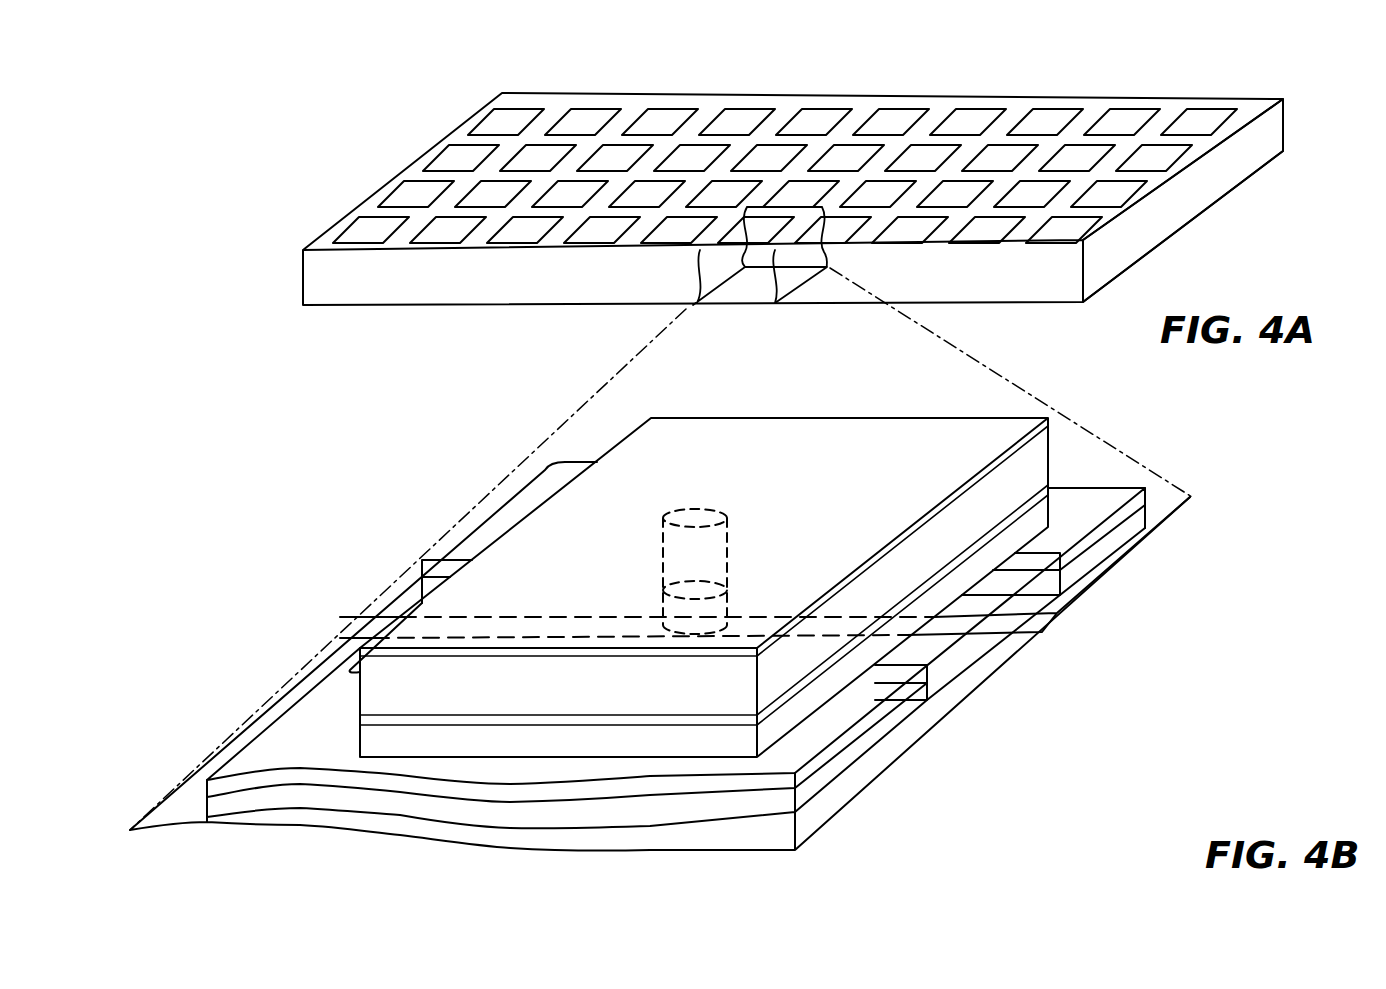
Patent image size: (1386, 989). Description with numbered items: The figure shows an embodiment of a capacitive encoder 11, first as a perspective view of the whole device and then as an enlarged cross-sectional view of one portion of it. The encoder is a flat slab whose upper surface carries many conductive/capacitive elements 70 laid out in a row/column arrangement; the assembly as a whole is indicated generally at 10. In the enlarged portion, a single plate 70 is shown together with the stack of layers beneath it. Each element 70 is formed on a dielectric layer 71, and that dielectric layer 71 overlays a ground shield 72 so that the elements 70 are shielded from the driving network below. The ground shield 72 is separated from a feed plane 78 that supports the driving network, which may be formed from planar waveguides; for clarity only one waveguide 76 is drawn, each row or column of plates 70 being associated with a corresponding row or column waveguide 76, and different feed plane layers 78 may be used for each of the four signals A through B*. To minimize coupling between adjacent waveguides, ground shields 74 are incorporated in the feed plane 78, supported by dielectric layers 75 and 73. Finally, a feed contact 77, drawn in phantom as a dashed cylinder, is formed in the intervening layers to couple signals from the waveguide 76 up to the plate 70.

In FIG. 4A, the microfluidic device array / wafer 10 is at (927, 66).
In FIG. 4A, the capacitive encoder 11 is at (1275, 134).
In FIG. 4A, the conductive/capacitive element 70 is at (1207, 120).
In FIG. 4B, the conductive/capacitive element 70 is at (838, 464).
In FIG. 4B, the dielectric layer 71 is at (1043, 450).
In FIG. 4B, the ground shield 72 is at (1048, 486).
In FIG. 4B, the dielectric layer 73 is at (1048, 517).
In FIG. 4B, the ground shield 74 is at (1112, 494).
In FIG. 4B, the dielectric layer 75 is at (1145, 513).
In FIG. 4B, the waveguide 76 is at (1045, 627).
In FIG. 4B, the feed contact 77 is at (700, 512).
In FIG. 4B, the feed plane 78 is at (1123, 567).